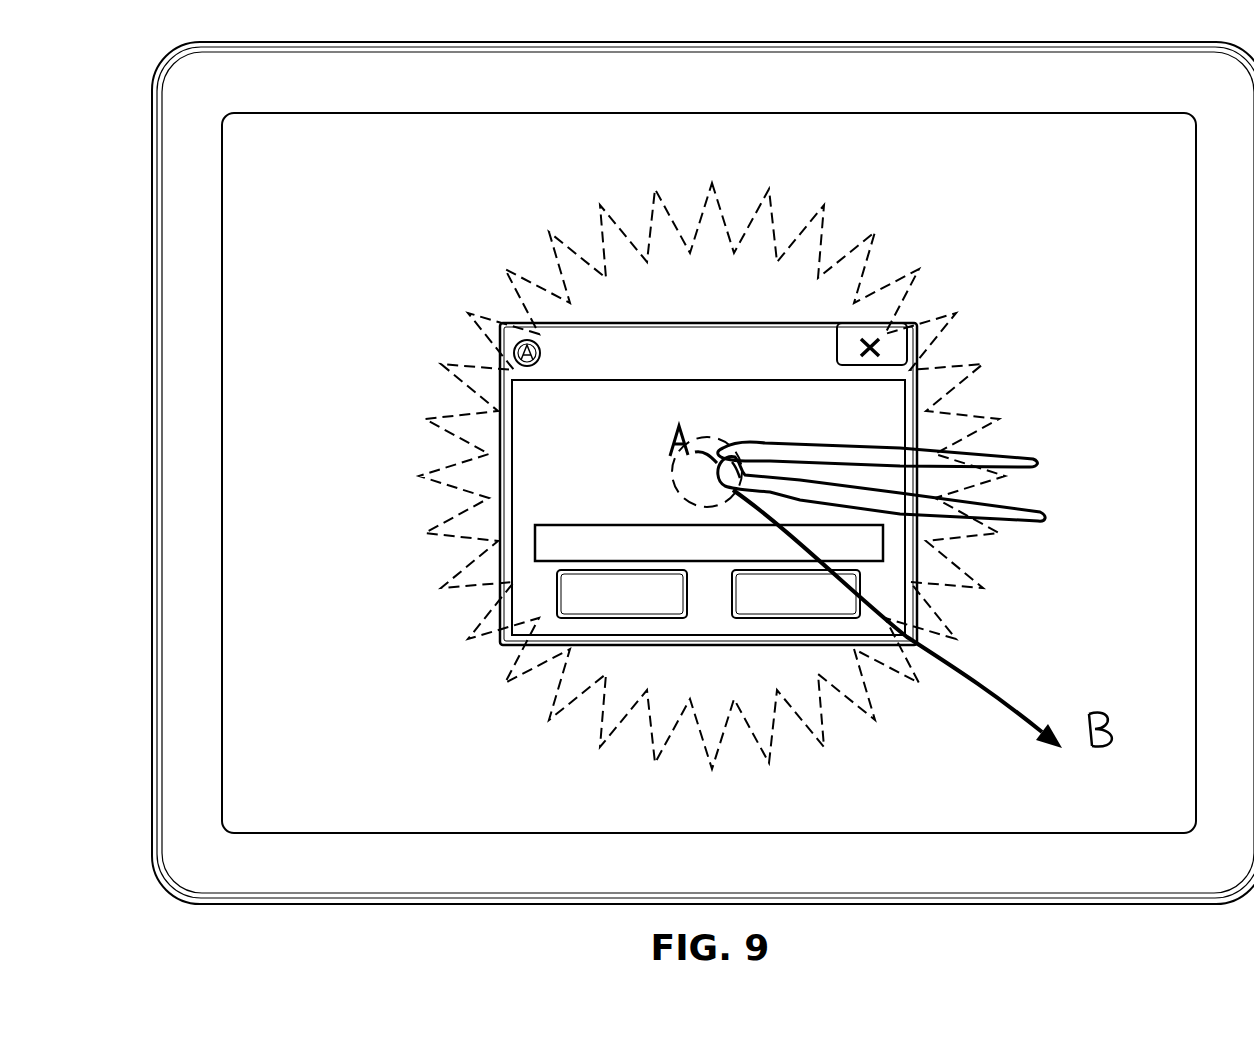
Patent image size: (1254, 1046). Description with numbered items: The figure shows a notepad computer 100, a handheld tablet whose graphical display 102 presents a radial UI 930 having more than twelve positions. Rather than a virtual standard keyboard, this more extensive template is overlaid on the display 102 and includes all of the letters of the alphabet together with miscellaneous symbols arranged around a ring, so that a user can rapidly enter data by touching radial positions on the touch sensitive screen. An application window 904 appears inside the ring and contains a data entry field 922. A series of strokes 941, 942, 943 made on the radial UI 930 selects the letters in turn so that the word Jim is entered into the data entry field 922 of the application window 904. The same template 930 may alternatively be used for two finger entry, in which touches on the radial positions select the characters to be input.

The notepad computer 100 is at (146, 190).
The graphical display 102 is at (348, 210).
The application window 904 is at (806, 501).
The data entry field 922 is at (615, 535).
The radial UI 930 is at (432, 405).
The stroke 941 is at (1020, 518).
The stroke 942 is at (1012, 447).
The stroke 943 is at (1018, 722).